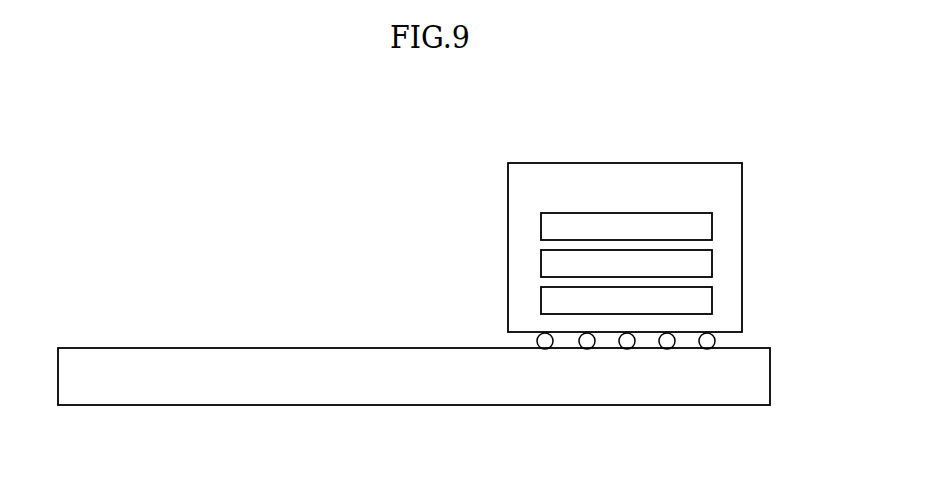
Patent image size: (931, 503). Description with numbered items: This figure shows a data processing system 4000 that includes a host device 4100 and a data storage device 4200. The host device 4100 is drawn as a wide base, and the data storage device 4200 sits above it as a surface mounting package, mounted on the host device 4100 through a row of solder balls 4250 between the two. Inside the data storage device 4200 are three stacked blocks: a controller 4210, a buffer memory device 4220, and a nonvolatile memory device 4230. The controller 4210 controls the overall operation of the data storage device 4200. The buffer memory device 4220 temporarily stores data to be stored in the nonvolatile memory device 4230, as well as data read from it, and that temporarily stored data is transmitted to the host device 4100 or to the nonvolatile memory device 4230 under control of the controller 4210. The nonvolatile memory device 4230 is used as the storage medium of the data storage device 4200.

The data processing system 4000 is at (120, 103).
The host device 4100 is at (414, 376).
The data storage device 4200 is at (625, 247).
The controller 4210 is at (626, 228).
The buffer memory device 4220 is at (626, 265).
The nonvolatile memory device 4230 is at (626, 302).
The solder ball 4250 is at (727, 338).